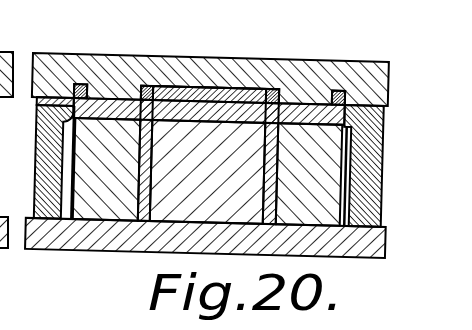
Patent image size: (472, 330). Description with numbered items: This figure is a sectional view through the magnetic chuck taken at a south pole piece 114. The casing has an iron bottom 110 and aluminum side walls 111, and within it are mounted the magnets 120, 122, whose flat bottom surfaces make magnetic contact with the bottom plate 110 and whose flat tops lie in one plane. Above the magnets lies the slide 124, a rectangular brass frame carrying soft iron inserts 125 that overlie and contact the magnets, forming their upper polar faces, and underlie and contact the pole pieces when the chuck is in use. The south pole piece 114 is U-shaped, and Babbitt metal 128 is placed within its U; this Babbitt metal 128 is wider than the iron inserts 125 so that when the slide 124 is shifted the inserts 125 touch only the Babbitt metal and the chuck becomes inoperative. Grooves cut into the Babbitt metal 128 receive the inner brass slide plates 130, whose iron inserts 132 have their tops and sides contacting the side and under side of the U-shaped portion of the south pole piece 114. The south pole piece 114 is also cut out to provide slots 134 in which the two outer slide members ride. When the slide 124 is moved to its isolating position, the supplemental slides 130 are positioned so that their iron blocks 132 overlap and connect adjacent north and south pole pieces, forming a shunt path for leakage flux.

The iron bottom 110 is at (193, 253).
The aluminum side walls 111 is at (6, 124).
The south polar pieces 114 is at (211, 64).
The magnet 120 is at (208, 172).
The magnet 122 is at (207, 172).
The slide 124 is at (217, 25).
The soft iron inserts 125 is at (267, 47).
The Babbitt metal 128 is at (209, 93).
The brass slide plates 130 is at (37, 113).
The iron inserts 132 is at (209, 125).
The slots 134 is at (234, 62).